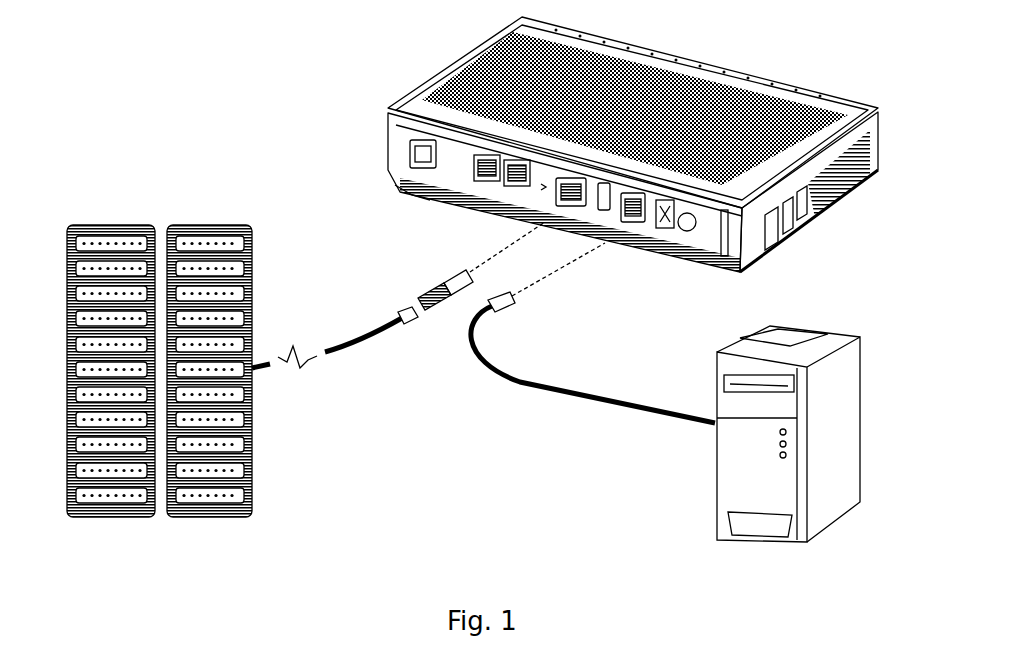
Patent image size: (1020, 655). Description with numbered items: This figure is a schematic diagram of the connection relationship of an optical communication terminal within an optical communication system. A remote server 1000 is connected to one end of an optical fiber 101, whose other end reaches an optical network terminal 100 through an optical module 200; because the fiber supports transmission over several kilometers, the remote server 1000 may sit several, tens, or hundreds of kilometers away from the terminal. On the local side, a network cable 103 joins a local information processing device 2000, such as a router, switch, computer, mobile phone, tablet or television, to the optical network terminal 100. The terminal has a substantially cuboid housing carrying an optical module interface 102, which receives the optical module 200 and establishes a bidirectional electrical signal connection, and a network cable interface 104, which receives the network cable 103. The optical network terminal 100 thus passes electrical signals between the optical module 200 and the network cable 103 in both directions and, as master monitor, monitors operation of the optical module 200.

The optical network terminal 100 is at (458, 55).
The optical fiber 101 is at (368, 343).
The optical module interface 102 is at (562, 228).
The network cable 103 is at (520, 378).
The network cable interface 104 is at (641, 228).
The optical module 200 is at (440, 283).
The remote server 1000 is at (227, 225).
The local information processing device 2000 is at (717, 468).